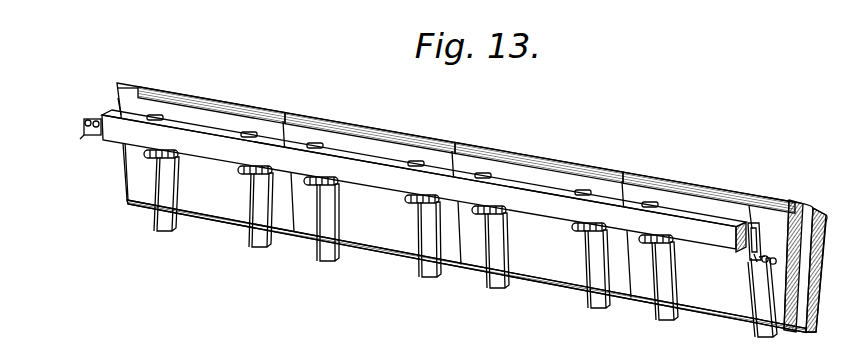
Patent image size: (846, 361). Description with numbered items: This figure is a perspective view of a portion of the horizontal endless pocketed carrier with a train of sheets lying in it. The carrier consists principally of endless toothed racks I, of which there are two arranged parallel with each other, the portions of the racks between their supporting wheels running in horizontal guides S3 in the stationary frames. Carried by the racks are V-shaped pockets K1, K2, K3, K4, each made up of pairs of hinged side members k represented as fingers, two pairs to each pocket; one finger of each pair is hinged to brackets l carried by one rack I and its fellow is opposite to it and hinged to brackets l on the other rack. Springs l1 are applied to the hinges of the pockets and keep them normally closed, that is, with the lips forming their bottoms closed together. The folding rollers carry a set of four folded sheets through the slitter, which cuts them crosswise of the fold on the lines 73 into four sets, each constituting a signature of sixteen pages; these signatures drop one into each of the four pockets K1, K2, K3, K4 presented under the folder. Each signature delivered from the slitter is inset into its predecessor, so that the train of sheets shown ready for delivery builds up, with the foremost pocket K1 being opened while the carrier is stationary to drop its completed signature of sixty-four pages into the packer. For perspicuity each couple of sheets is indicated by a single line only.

The cutting lines 73 is at (313, 113).
The endless toothed racks I is at (45, 120).
The horizontal guides S3 is at (360, 186).
The pocket K4 is at (230, 194).
The pocket K3 is at (418, 224).
The pocket K2 is at (586, 258).
The pocket K1 is at (748, 300).
The hinged side members k is at (460, 243).
The brackets l is at (748, 250).
The springs l1 is at (779, 270).